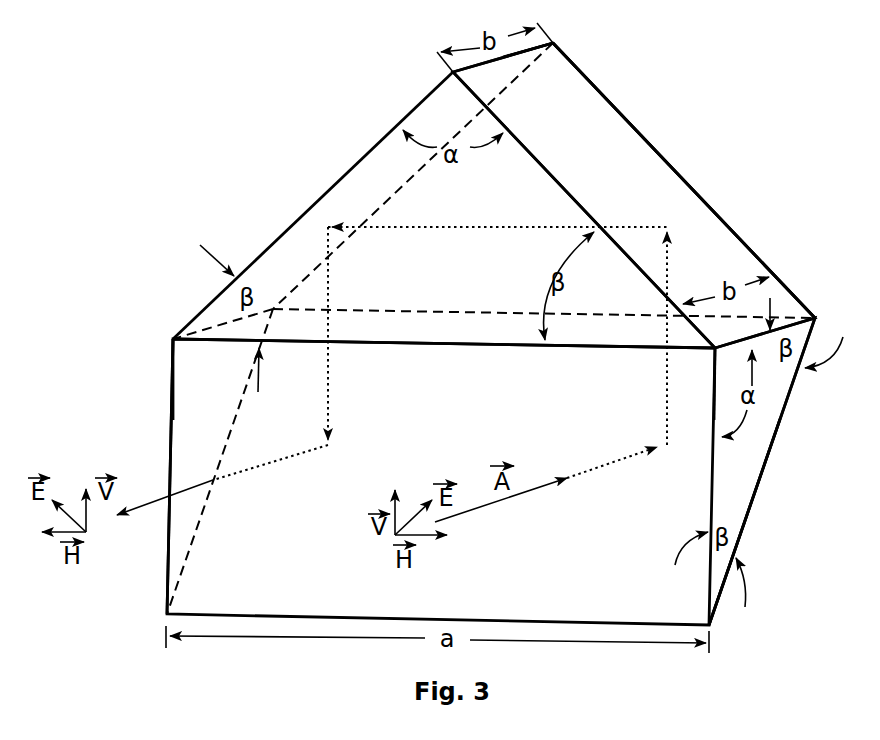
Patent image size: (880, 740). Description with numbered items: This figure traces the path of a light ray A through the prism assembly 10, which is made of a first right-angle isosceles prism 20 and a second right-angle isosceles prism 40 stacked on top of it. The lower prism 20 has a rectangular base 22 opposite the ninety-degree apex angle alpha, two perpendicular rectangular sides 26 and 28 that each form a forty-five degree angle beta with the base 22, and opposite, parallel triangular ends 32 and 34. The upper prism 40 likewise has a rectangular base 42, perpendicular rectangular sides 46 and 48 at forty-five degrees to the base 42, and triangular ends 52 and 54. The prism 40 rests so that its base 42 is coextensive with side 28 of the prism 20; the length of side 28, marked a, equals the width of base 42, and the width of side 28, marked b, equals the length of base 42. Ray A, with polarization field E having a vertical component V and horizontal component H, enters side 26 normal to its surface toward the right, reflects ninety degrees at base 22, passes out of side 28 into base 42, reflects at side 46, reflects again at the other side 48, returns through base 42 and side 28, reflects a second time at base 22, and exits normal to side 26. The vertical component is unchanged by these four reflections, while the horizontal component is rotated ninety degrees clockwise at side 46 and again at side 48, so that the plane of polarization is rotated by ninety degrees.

The prism assembly 10 is at (727, 150).
The first right-angle isosceles prism 20 is at (787, 411).
The rectangular base 22 is at (743, 452).
The rectangular side 26 is at (459, 442).
The rectangular side 28 is at (421, 330).
The right-angle isosceles triangle end 32 is at (733, 503).
The right-angle isosceles triangle end 34 is at (195, 404).
The second right-angle isosceles prism 40 is at (719, 215).
The rectangular base 42 is at (478, 330).
The rectangular side 46 is at (577, 97).
The rectangular side 48 is at (305, 262).
The right-angle isosceles triangle end 52 is at (618, 172).
The right-angle isosceles triangle end 54 is at (484, 202).